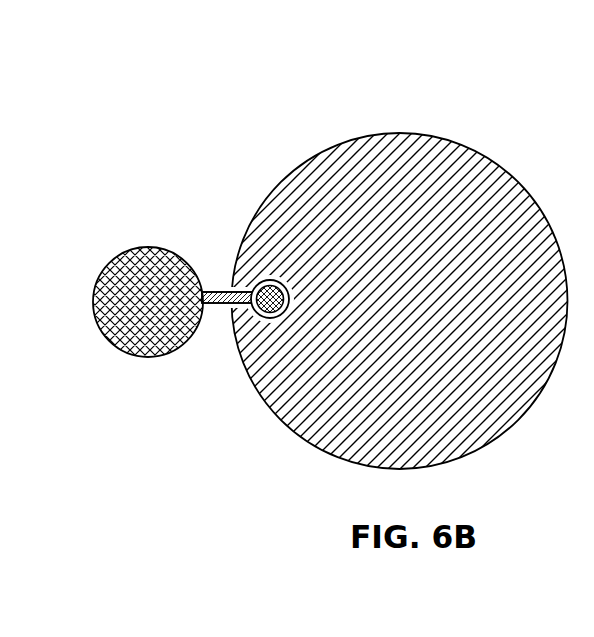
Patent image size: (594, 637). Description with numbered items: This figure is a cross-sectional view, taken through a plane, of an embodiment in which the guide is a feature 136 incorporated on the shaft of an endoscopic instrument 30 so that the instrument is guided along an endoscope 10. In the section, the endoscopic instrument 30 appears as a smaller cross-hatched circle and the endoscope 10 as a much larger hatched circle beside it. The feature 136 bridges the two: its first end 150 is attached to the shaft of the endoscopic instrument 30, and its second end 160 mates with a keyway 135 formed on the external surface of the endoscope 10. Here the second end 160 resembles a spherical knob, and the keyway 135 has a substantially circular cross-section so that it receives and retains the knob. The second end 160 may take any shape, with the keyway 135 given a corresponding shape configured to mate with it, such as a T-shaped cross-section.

The endoscope 10 is at (460, 187).
The endoscopic instrument 30 is at (140, 325).
The keyway 135 is at (270, 281).
The feature 136 is at (222, 291).
The first end 150 is at (215, 306).
The second end 160 is at (285, 290).